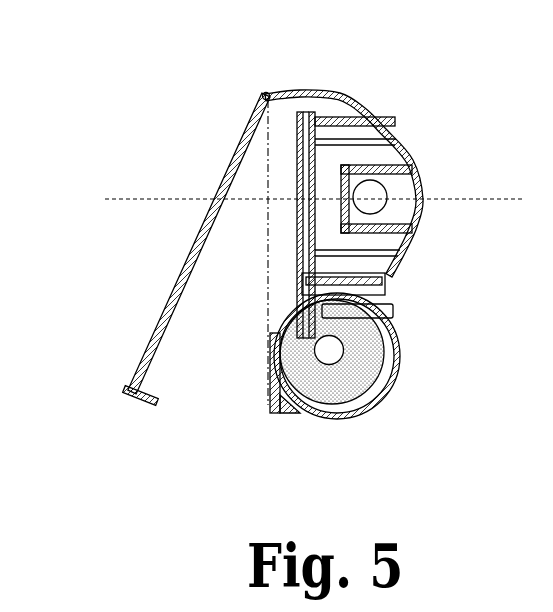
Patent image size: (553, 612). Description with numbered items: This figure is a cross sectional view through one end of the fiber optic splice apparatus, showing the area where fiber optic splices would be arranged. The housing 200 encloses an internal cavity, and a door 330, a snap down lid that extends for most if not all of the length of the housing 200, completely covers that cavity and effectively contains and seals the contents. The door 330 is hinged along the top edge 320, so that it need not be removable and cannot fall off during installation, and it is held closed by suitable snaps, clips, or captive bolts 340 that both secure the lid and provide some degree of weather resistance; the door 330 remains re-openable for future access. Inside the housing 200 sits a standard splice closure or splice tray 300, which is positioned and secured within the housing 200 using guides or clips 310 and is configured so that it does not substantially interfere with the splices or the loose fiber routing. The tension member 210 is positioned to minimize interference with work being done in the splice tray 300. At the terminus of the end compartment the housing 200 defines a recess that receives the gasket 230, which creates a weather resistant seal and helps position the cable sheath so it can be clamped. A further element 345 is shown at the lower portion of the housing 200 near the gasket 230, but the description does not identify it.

The housing 200 is at (402, 358).
The tension member 210 is at (377, 201).
The gasket 230 is at (368, 383).
The splice tray 300 is at (320, 112).
The guides or clips 310 is at (349, 128).
The top edge 320 is at (265, 96).
The door 330 is at (186, 264).
The captive bolts 340 is at (131, 395).
The lower support 345 is at (273, 403).